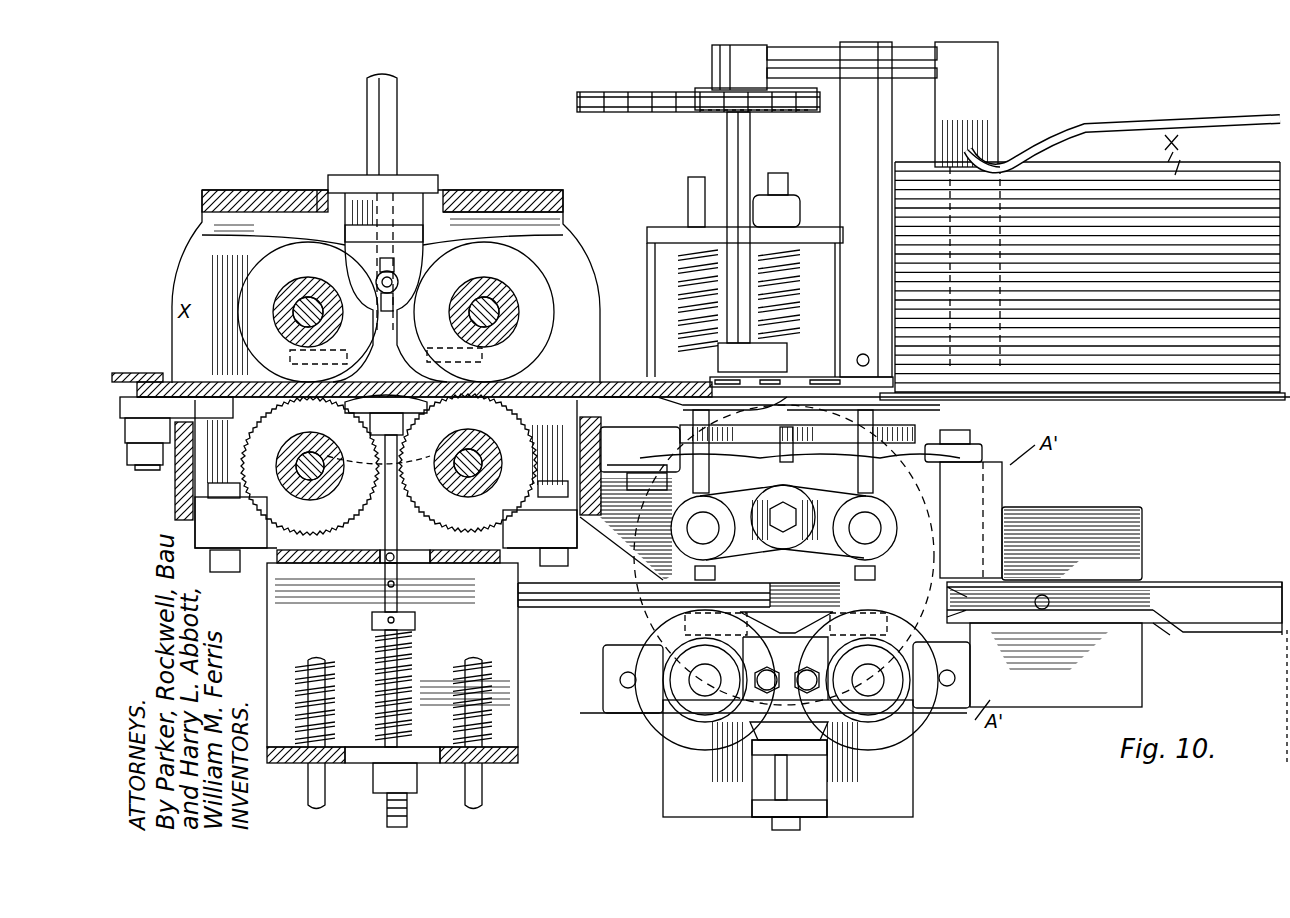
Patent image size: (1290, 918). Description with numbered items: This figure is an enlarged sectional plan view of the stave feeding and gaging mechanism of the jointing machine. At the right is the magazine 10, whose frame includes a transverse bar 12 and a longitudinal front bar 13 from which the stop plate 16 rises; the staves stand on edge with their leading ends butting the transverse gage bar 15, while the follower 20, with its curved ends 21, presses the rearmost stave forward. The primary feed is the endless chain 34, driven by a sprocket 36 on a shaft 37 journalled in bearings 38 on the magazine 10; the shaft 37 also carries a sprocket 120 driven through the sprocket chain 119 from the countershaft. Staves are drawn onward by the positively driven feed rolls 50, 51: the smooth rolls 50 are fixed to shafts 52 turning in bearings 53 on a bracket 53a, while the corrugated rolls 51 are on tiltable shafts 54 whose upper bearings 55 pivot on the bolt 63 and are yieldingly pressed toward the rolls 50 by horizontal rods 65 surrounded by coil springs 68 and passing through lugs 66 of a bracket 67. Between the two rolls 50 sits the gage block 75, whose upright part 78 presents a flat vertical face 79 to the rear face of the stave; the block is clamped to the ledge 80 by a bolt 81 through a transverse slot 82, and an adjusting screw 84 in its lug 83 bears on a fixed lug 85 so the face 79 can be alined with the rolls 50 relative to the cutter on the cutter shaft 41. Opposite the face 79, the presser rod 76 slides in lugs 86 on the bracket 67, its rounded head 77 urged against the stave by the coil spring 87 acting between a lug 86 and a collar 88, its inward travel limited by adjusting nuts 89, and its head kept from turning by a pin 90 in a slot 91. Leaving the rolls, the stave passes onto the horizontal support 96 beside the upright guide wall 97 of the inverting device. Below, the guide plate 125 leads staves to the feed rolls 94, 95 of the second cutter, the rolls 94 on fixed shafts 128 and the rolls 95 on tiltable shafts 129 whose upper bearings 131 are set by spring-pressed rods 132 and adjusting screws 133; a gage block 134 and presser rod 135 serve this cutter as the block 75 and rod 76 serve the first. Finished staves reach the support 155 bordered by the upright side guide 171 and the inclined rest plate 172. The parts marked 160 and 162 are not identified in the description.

The cutter shaft 41 is at (397, 100).
The adjusting screw 84 is at (392, 150).
The lug 83 is at (390, 255).
The fixed lug 85 is at (372, 180).
The transverse slot 82 is at (405, 225).
The ledge 80 is at (511, 286).
The bolt 81 is at (398, 282).
The gage block 75 is at (390, 287).
The feed rolls 50 is at (396, 312).
The bearings 53 is at (292, 290).
The shafts 52 is at (300, 310).
The bracket 53a is at (258, 286).
The upright part 78 is at (372, 365).
The stave engaging face 79 is at (396, 370).
The stave support 96 is at (140, 372).
The side guide wall 97 is at (122, 380).
The bracket 162 is at (147, 445).
The stave engaging head 77 is at (345, 408).
The feed rolls 51 is at (389, 464).
The shafts 54 is at (300, 460).
The upper bearings 55 is at (378, 449).
The presser rod 76 is at (385, 518).
The lugs 66 is at (480, 563).
The pin 90 is at (396, 560).
The bracket 67 is at (392, 663).
The lugs 86 is at (385, 580).
The slot 91 is at (388, 590).
The collar 88 is at (415, 618).
The coil spring 87 is at (412, 650).
The coil springs 68 is at (335, 690).
The horizontal rods 65 is at (308, 797).
The adjusting nuts 89 is at (417, 778).
The sprocket chain 119 is at (640, 115).
The sprocket 120 is at (710, 85).
The shaft 37 is at (727, 140).
The presser rod 135 is at (788, 178).
The gage bar 15 is at (870, 150).
The transverse bar 12 is at (998, 62).
The spring-pressed rods 132 is at (688, 195).
The bearings 38 is at (752, 356).
The endless chain 34 is at (800, 380).
The sprocket 36 is at (742, 409).
The box 160 is at (640, 458).
The magazine 10 is at (1087, 237).
The front bar 13 is at (1265, 405).
The stop plate 16 is at (1153, 393).
The follower 20 is at (1165, 122).
The curved ends 21 is at (1015, 152).
The feed rolls 95 is at (770, 455).
The pivot bolt 63 is at (784, 500).
The upper bearings 131 is at (790, 522).
The shafts 129 is at (718, 522).
The adjusting screws 133 is at (690, 565).
The gage block 134 is at (790, 612).
The feed rolls 94 is at (786, 680).
The shafts 128 is at (710, 658).
The guide plate 125 is at (603, 650).
The side guide 171 is at (1225, 577).
The support 155 is at (1217, 639).
The rest plate 172 is at (1270, 628).